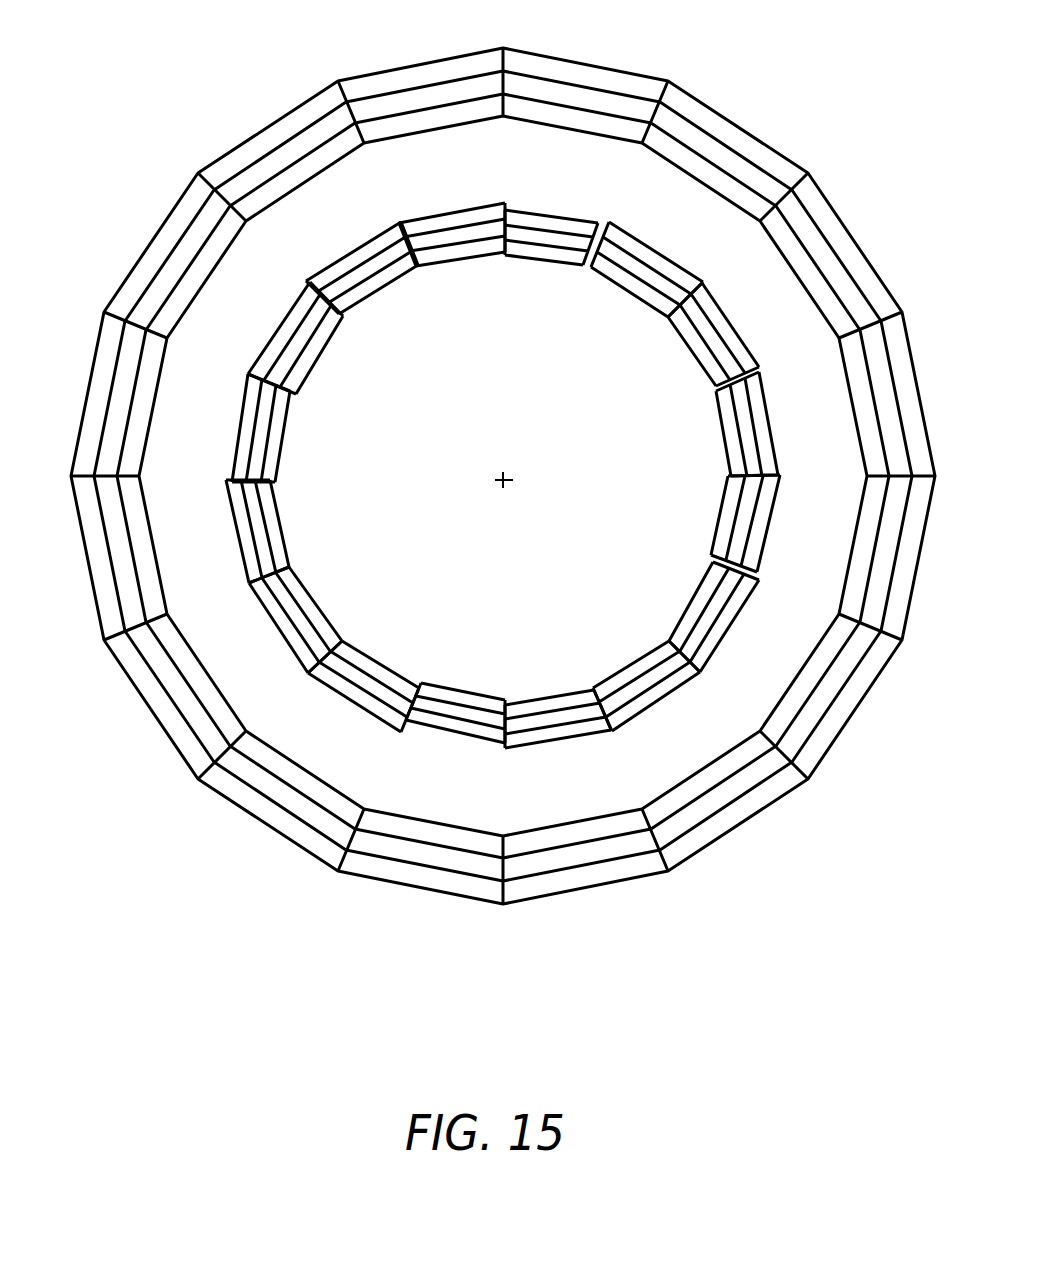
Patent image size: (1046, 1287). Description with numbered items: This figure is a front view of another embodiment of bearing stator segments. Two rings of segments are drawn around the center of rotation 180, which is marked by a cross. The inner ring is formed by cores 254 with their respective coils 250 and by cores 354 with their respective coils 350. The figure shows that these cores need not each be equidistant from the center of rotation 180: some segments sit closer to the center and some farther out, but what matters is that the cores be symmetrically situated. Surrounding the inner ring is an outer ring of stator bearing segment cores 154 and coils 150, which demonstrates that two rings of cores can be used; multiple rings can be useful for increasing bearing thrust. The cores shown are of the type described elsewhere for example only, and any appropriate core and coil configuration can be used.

The coils 150 is at (503, 456).
The stator bearing segment cores 154 is at (503, 476).
The center of rotation 180 is at (508, 477).
The coils 250 is at (632, 485).
The cores 254 is at (725, 523).
The coils 350 is at (593, 609).
The cores 354 is at (619, 636).